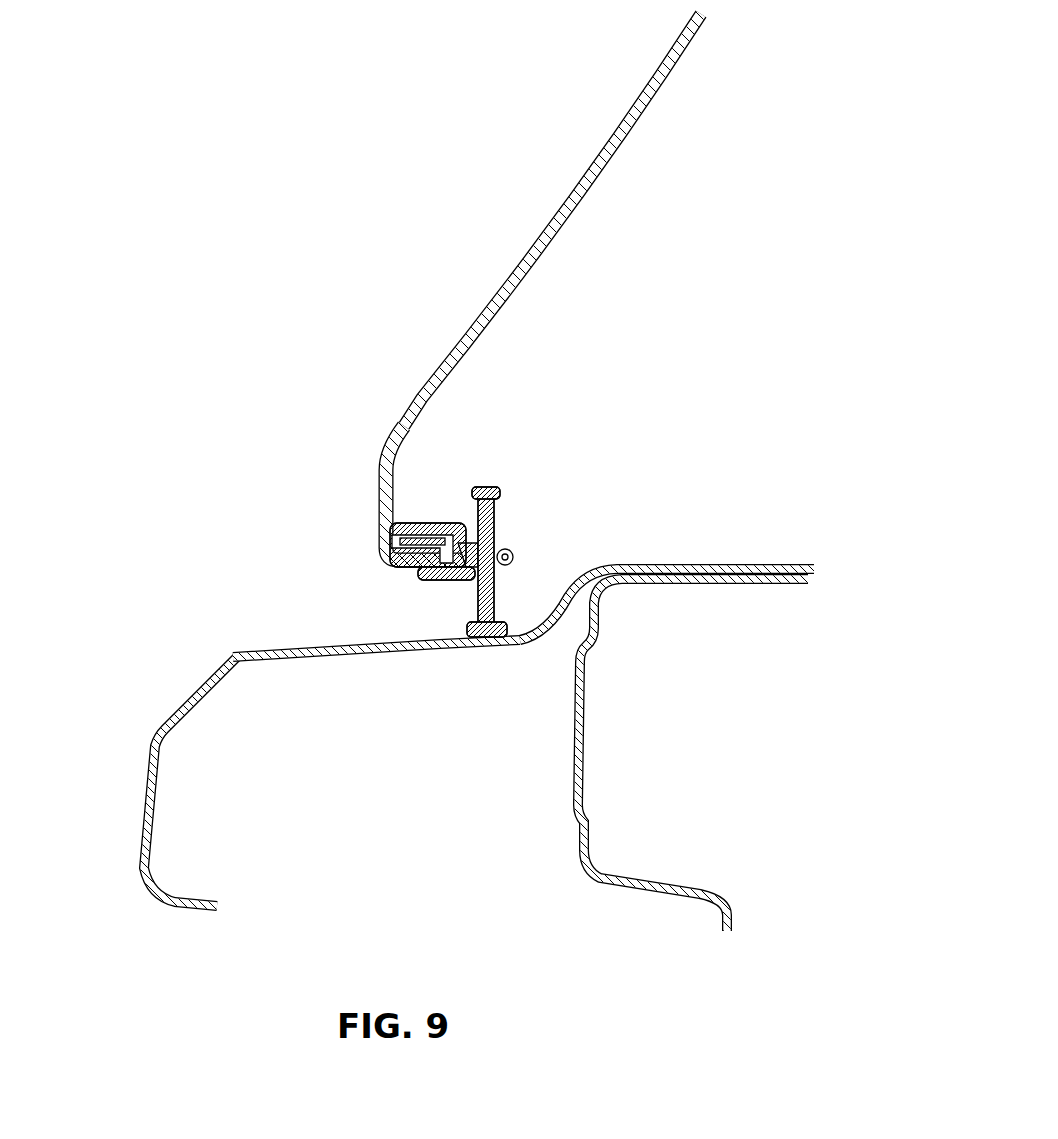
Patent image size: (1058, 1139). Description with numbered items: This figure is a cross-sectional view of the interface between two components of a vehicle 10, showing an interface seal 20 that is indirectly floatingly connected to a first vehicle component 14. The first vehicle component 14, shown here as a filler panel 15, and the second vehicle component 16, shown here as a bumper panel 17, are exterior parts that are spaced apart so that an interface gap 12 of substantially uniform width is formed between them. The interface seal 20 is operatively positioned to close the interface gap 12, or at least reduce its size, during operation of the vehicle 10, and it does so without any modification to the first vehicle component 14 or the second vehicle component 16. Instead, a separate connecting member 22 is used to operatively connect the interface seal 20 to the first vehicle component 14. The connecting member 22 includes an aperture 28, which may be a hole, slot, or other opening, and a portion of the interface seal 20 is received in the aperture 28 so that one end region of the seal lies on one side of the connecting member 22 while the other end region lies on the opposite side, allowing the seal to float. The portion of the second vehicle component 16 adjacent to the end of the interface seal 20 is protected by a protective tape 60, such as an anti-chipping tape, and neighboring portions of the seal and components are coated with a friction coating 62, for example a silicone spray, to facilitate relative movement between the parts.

The vehicle 10 is at (196, 266).
The first vehicle component 14 is at (469, 166).
The filler panel 15 is at (416, 392).
The interface gap 12 is at (366, 598).
The connecting member 22 is at (445, 590).
The aperture 28 is at (498, 543).
The interface seal 20 is at (526, 565).
The second vehicle component 16 is at (125, 698).
The bumper panel 17 is at (237, 654).
The protective tape 60 is at (478, 643).
The friction coating 62 is at (478, 643).